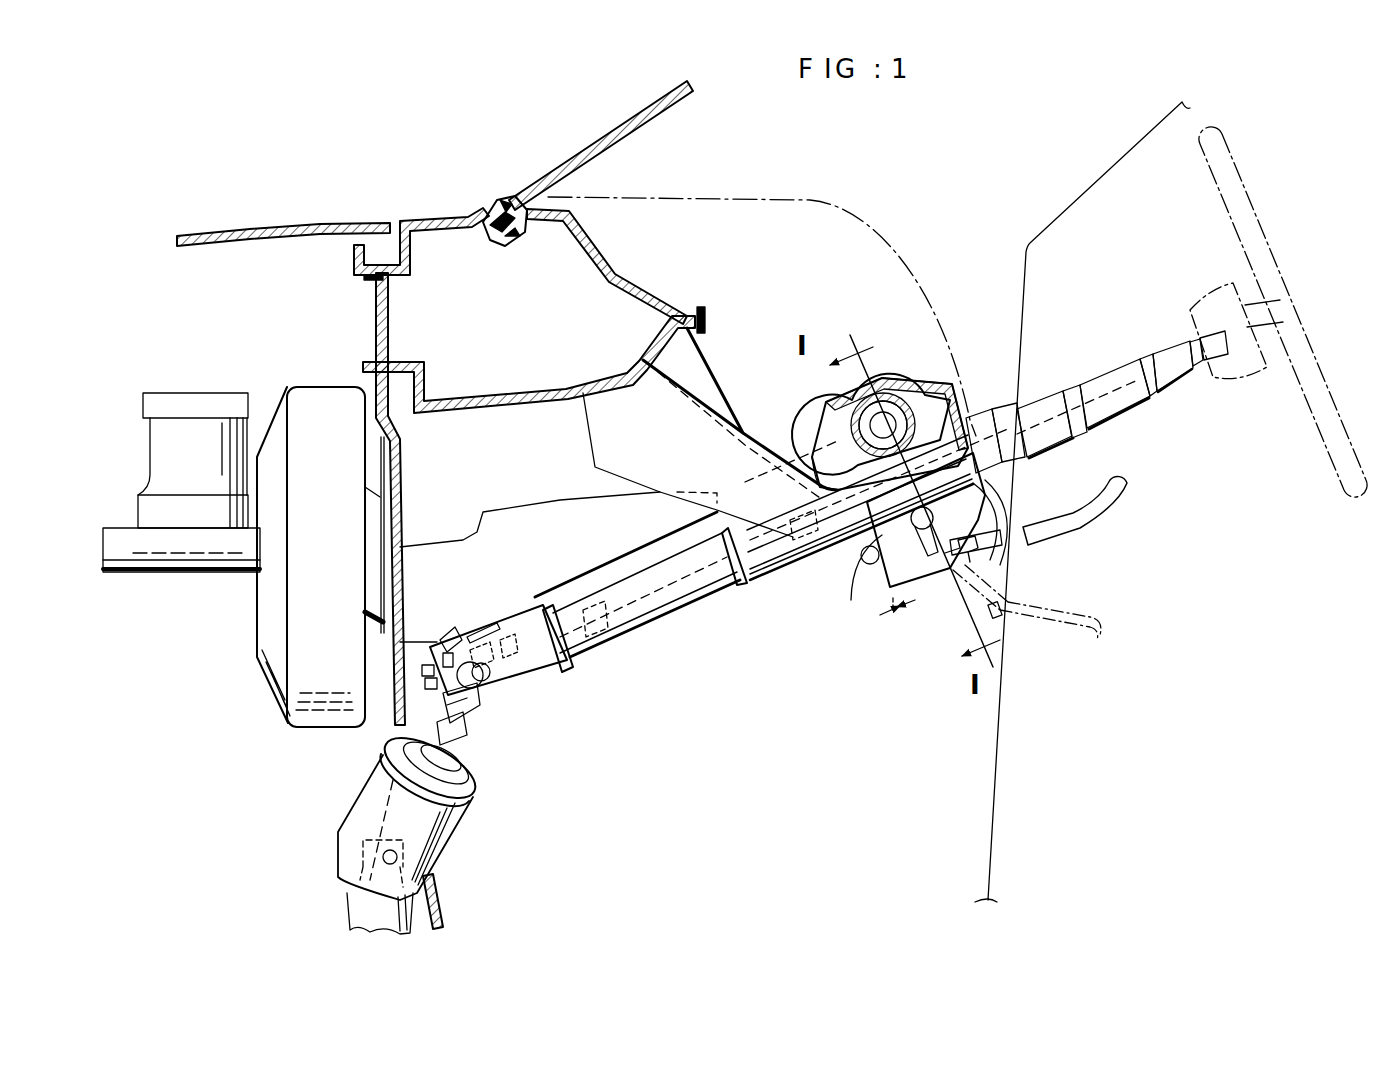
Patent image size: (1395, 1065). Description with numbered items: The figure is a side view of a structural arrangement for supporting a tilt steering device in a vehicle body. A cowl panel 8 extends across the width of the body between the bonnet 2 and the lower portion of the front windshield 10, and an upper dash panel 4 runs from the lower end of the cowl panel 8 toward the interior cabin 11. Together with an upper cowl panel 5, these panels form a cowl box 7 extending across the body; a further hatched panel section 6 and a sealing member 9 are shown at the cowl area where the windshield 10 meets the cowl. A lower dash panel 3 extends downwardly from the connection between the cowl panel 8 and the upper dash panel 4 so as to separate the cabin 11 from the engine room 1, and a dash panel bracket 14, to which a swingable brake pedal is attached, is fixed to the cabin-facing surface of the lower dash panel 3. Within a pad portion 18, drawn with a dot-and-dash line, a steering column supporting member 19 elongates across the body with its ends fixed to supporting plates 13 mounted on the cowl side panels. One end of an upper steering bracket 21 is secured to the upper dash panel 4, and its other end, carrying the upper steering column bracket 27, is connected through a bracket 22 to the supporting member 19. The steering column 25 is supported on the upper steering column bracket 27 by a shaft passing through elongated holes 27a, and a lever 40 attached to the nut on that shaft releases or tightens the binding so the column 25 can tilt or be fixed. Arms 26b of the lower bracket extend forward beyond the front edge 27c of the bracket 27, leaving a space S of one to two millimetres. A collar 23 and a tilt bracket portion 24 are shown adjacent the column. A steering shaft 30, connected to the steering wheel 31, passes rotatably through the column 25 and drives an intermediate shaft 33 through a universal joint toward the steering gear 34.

The engine room 1 is at (190, 712).
The bonnet 2 is at (289, 233).
The lower dash panel 3 is at (383, 665).
The upper dash panel 4 is at (540, 386).
The upper cowl panel 5 is at (445, 216).
The dash upper panel 6 is at (393, 309).
The cowl box 7 is at (573, 312).
The cowl panel 8 is at (372, 333).
The weather strip 9 is at (500, 188).
The front windshield 10 is at (610, 128).
The interior cabin 11 is at (775, 708).
The supporting plate 13 is at (902, 378).
The dash panel bracket 14 is at (420, 577).
The pad portion 18 is at (812, 196).
The steering column supporting member 19 is at (850, 420).
The upper steering bracket 21 is at (683, 420).
The bracket 22 is at (823, 440).
The collar 23 is at (967, 403).
The tilt bracket 24 is at (975, 480).
The steering column 25 is at (1000, 407).
The arm 26b is at (903, 610).
The upper steering column bracket 27 is at (924, 567).
The hole 27a is at (958, 556).
The front edge 27c is at (860, 549).
The steering shaft 30 is at (1151, 352).
The steering wheel 31 is at (1245, 197).
The intermediate shaft 33 is at (460, 737).
The steering gear box 34 is at (337, 874).
The lever 40 is at (1072, 523).